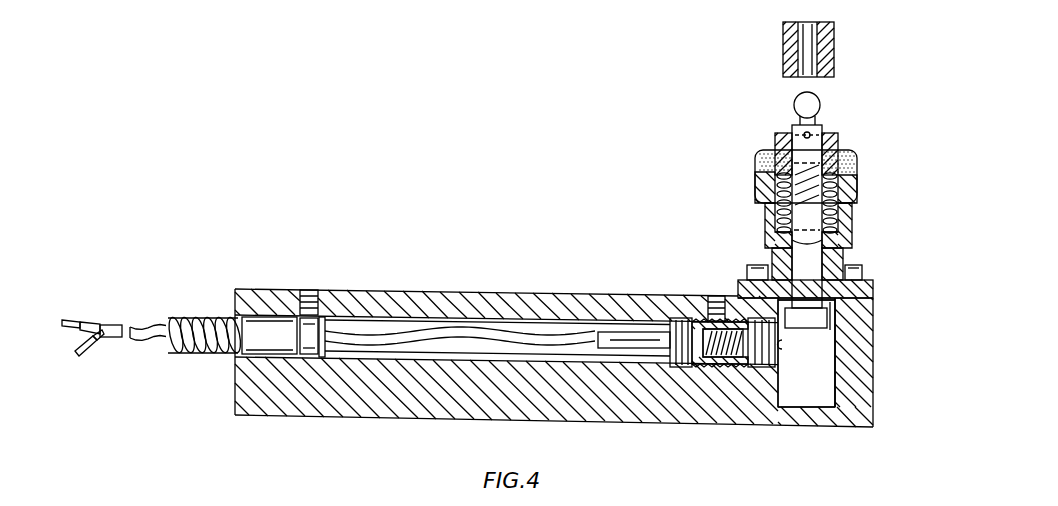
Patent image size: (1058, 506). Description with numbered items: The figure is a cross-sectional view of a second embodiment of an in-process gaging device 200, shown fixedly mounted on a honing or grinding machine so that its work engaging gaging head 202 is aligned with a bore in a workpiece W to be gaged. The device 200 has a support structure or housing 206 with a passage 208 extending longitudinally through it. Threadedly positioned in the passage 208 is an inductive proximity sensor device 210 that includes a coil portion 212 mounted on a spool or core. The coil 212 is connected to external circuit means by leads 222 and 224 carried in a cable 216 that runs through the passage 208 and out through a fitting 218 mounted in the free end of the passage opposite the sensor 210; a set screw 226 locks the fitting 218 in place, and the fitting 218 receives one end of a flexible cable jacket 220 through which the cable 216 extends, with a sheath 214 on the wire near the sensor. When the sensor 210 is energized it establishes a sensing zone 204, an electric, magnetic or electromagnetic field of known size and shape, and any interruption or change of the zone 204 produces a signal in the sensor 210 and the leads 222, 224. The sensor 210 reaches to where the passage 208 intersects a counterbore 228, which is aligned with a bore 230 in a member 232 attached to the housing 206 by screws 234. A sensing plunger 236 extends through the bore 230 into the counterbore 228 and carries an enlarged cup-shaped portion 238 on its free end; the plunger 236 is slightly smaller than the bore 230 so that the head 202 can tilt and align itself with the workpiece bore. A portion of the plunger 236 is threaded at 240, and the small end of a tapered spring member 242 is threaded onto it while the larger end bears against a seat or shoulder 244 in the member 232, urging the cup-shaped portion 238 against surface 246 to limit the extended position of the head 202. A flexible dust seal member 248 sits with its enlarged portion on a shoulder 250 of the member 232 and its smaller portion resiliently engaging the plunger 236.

The workpiece W is at (833, 52).
The in-process gaging device 200 is at (373, 422).
The gaging head 202 is at (795, 105).
The sensing zone 204 is at (780, 340).
The housing 206 is at (427, 405).
The passage 208 is at (490, 320).
The inductive proximity sensor device 210 is at (692, 315).
The coil portion 212 is at (723, 347).
The wire sheath 214 is at (667, 352).
The cable 216 is at (403, 330).
The fitting 218 is at (265, 325).
The flexible cable jacket 220 is at (193, 315).
The lead 222 is at (78, 322).
The lead 224 is at (88, 346).
The set screw 226 is at (317, 312).
The counterbore 228 is at (837, 385).
The bore 230 is at (813, 243).
The member 232 is at (768, 227).
The screws 234 is at (862, 270).
The sensing plunger 236 is at (822, 130).
The cup-shaped portion 238 is at (830, 320).
The threaded portion 240 is at (758, 165).
The tapered spring member 242 is at (853, 165).
The seat or shoulder 244 is at (772, 247).
The surface 246 is at (843, 303).
The flexible dust seal member 248 is at (853, 155).
The shoulder 250 is at (767, 190).